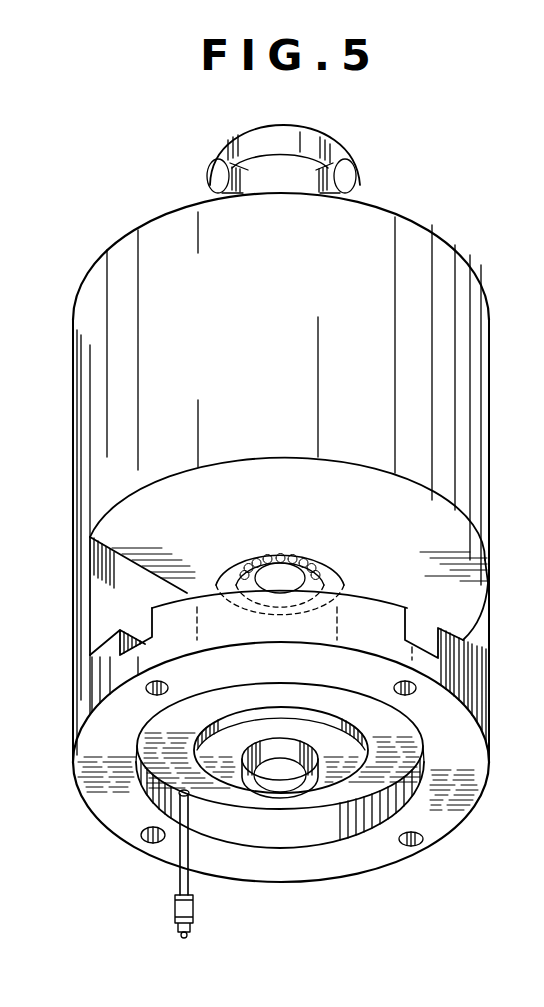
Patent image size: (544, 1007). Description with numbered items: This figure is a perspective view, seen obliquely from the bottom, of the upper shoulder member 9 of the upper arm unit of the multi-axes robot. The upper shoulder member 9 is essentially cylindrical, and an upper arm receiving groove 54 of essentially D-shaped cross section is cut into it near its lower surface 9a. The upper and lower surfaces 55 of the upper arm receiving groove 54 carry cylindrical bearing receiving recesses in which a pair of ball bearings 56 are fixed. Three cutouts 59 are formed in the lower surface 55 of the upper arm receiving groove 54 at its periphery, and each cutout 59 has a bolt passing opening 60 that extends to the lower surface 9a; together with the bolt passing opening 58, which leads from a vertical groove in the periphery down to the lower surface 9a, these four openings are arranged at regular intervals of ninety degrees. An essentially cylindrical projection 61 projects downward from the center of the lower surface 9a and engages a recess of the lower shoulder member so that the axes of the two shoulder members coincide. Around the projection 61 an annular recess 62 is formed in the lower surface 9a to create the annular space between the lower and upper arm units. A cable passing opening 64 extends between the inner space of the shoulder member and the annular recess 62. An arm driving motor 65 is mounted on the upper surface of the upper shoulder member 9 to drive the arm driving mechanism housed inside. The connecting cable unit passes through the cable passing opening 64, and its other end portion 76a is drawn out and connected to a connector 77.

The upper shoulder member 9 is at (490, 405).
The lower surface 9a is at (455, 814).
The upper arm receiving groove 54 is at (463, 638).
The upper and lower surfaces of the upper arm receiving groove 55 is at (488, 583).
The ball bearings 56 is at (338, 565).
The bolt passing opening 58 is at (152, 843).
The cutouts 59 is at (137, 608).
The bolt passing openings 60 is at (168, 686).
The projection 61 is at (285, 792).
The annular recess 62 is at (343, 830).
The cable passing opening 64 is at (175, 803).
The arm driving motor 65 is at (332, 136).
The other end portion of the connecting cable unit 76a is at (178, 866).
The connector 77 is at (176, 905).